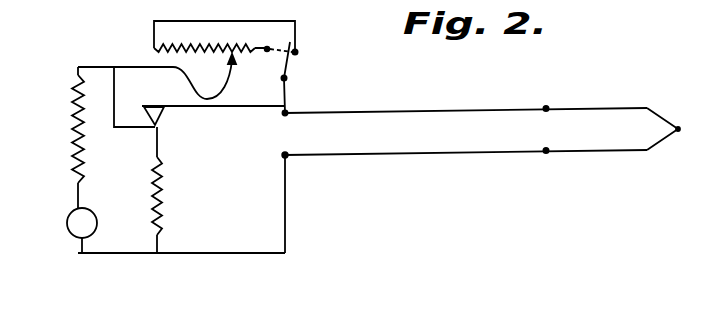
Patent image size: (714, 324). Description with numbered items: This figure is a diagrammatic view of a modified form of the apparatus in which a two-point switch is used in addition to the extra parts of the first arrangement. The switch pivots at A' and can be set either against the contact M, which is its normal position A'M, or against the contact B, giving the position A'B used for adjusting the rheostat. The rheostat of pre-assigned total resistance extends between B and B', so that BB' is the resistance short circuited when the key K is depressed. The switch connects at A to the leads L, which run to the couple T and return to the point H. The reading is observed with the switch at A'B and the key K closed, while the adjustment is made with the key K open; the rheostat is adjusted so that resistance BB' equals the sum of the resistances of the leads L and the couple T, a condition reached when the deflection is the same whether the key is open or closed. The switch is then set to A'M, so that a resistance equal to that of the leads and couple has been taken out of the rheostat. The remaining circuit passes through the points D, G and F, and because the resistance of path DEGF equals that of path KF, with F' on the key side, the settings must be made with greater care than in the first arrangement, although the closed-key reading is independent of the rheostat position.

The circuit point D is at (157, 84).
The key K is at (213, 104).
The rheostat end point B' is at (224, 36).
The switch contact B is at (261, 62).
The switch contact M is at (295, 51).
The switch pivot A' is at (272, 77).
The circuit point A is at (271, 122).
The circuit point H is at (272, 199).
The leads L is at (466, 130).
The couple T is at (632, 129).
The circuit point F is at (57, 137).
The circuit point G is at (82, 230).
The circuit point F' is at (152, 203).